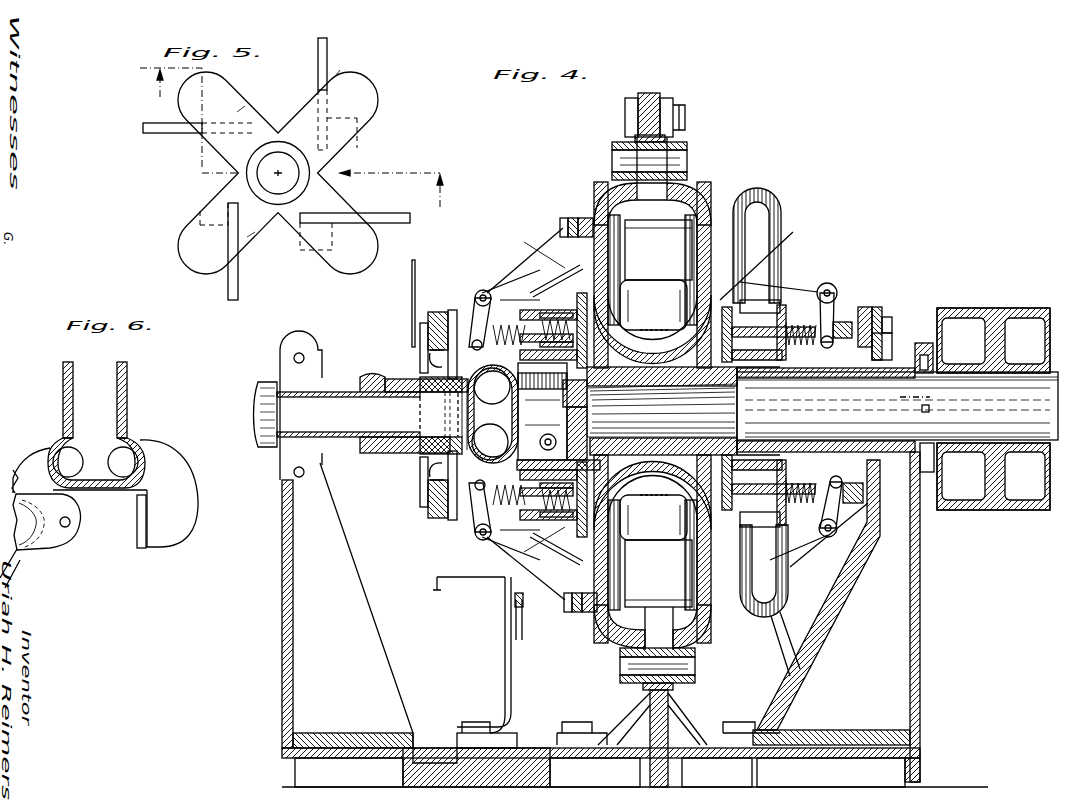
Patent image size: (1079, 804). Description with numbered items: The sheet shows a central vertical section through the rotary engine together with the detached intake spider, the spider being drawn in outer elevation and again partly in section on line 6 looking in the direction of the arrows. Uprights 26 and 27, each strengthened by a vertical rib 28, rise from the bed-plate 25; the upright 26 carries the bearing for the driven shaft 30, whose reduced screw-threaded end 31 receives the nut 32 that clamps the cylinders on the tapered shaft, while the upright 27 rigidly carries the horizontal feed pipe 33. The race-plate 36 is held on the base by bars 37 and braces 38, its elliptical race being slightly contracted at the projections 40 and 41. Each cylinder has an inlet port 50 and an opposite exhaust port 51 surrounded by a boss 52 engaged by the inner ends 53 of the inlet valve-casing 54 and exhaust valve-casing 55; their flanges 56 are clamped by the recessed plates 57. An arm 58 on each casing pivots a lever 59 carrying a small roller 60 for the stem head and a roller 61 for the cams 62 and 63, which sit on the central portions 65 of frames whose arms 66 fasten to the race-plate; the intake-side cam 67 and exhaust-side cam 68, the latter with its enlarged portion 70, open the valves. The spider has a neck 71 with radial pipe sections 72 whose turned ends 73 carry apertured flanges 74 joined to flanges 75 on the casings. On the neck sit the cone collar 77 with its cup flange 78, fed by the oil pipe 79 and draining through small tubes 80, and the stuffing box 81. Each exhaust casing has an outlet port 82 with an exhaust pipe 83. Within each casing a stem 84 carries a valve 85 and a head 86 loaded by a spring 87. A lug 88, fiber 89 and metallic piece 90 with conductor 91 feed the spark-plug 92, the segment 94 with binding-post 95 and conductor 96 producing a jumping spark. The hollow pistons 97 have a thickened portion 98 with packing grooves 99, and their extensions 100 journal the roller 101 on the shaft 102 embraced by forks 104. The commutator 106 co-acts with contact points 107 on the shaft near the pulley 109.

In FIG. 5, the section line 6— 6 is at (300, 134).
In FIG. 4, the bed or base-plate 25 is at (635, 758).
In FIG. 4, the upright 26 is at (920, 598).
In FIG. 4, the upright 27 is at (282, 675).
In FIG. 4, the vertical rib 28 is at (852, 618).
In FIG. 4, the driven or power transmitting shaft 30 is at (940, 400).
In FIG. 4, the reduced and screw-threaded inner end 31 is at (662, 410).
In FIG. 4, the nut 32 is at (552, 411).
In FIG. 4, the intake or feed pipe 33 is at (322, 378).
In FIG. 4, the piston-controlling race-plate 36 is at (666, 70).
In FIG. 4, the bars 37 is at (507, 700).
In FIG. 4, the braces 38 is at (625, 712).
In FIG. 4, the inward projection 40 is at (595, 772).
In FIG. 4, the inward projection 41 is at (686, 115).
In FIG. 4, the inlet port 50 is at (577, 300).
In FIG. 4, the outlet or exhaust port 51 is at (780, 300).
In FIG. 4, the annular flange or boss 52 is at (748, 555).
In FIG. 4, the inner ends of the valve-casings 53 is at (749, 543).
In FIG. 4, the inlet valve-casing 54 is at (520, 413).
In FIG. 4, the exhaust valve-casing 55 is at (818, 441).
In FIG. 4, the flange 56 is at (580, 265).
In FIG. 4, the centrally apertured and peripherally recessed plate 57 is at (700, 398).
In FIG. 4, the arm 58 is at (495, 292).
In FIG. 4, the lever 59 is at (478, 296).
In FIG. 4, the small roller 60 is at (458, 400).
In FIG. 4, the roller 61 is at (846, 322).
In FIG. 4, the valve operating cam 62 is at (428, 318).
In FIG. 4, the valve operating cam 63 is at (855, 549).
In FIG. 4, the central circular portion 65 is at (420, 330).
In FIG. 4, the arms 66 is at (520, 265).
In FIG. 4, the cam 67 is at (435, 404).
In FIG. 4, the cam 68 is at (866, 307).
In FIG. 4, the inwardly extended or enlarged portion 70 is at (890, 338).
In FIG. 5, the tubular portion or neck 71 is at (322, 170).
In FIG. 6, the tubular portion or neck 71 is at (96, 425).
In FIG. 4, the tubular portion or neck 71 is at (395, 378).
In FIG. 5, the radial pipe sections 72 is at (237, 112).
In FIG. 6, the radial pipe sections 72 is at (36, 453).
In FIG. 5, the turned ends 73 is at (336, 75).
In FIG. 6, the turned ends 73 is at (54, 537).
In FIG. 5, the apertured flange 74 is at (318, 68).
In FIG. 6, the apertured flange 74 is at (117, 523).
In FIG. 4, the apertured flange 74 is at (462, 415).
In FIG. 4, the flange 75 is at (493, 414).
In FIG. 4, the cone-shaped collar or nut 77 is at (430, 375).
In FIG. 4, the outwardly turned flange 78 is at (428, 358).
In FIG. 4, the pipe 79 is at (415, 275).
In FIG. 4, the small tubes 80 is at (521, 397).
In FIG. 4, the stuffing box 81 is at (365, 378).
In FIG. 4, the outlet port 82 is at (760, 413).
In FIG. 4, the exhaust pipe 83 is at (770, 205).
In FIG. 4, the stem 84 is at (795, 372).
In FIG. 4, the valve 85 is at (700, 386).
In FIG. 4, the head 86 is at (848, 443).
In FIG. 4, the spring 87 is at (818, 445).
In FIG. 4, the lug 88 is at (585, 218).
In FIG. 4, the piece of fiber 89 is at (572, 218).
In FIG. 4, the metallic piece 90 is at (560, 225).
In FIG. 4, the electric conductor 91 is at (620, 235).
In FIG. 4, the spark-plug 92 is at (652, 412).
In FIG. 4, the segment 94 is at (540, 635).
In FIG. 4, the adjustable binding-post or screw 95 is at (518, 607).
In FIG. 4, the conductor 96 is at (437, 585).
In FIG. 4, the piston 97 is at (656, 393).
In FIG. 4, the thickened portion 98 is at (659, 399).
In FIG. 4, the grooves 99 is at (636, 525).
In FIG. 4, the spaced apart extensions 100 is at (612, 195).
In FIG. 4, the roller-bearing roller 101 is at (664, 138).
In FIG. 4, the shaft of the roller 102 is at (687, 161).
In FIG. 4, the forks 104 is at (620, 142).
In FIG. 4, the commutator 106 is at (922, 343).
In FIG. 4, the contact points 107 is at (915, 386).
In FIG. 4, the pulley or gear 109 is at (993, 409).